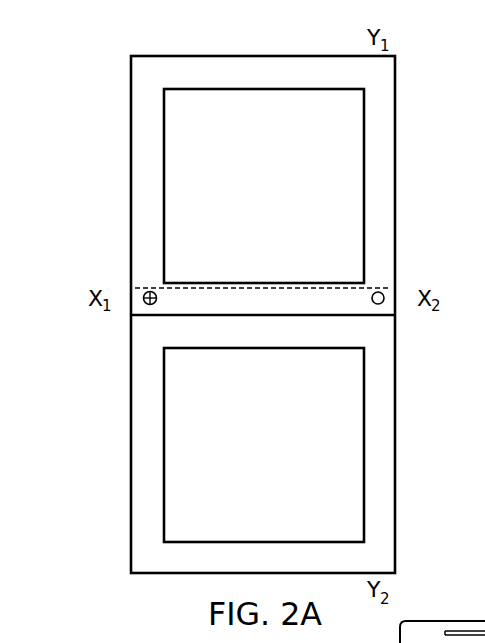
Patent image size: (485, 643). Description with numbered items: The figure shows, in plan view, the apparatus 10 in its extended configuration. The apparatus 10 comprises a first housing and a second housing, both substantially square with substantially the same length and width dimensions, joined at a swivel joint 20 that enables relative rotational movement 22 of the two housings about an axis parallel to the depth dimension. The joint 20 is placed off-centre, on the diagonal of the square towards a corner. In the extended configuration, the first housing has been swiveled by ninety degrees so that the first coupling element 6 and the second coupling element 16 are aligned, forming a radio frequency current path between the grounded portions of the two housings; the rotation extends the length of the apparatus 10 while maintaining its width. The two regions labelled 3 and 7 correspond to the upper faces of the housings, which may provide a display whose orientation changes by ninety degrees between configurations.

The apparatus 10 is at (62, 284).
The first display panel 3 is at (270, 188).
The second display panel 7 is at (270, 448).
The first coupling element 6 is at (148, 305).
The second coupling element 16 is at (149, 291).
The joint 20 is at (384, 298).
The relative rotational movement 22 is at (109, 137).